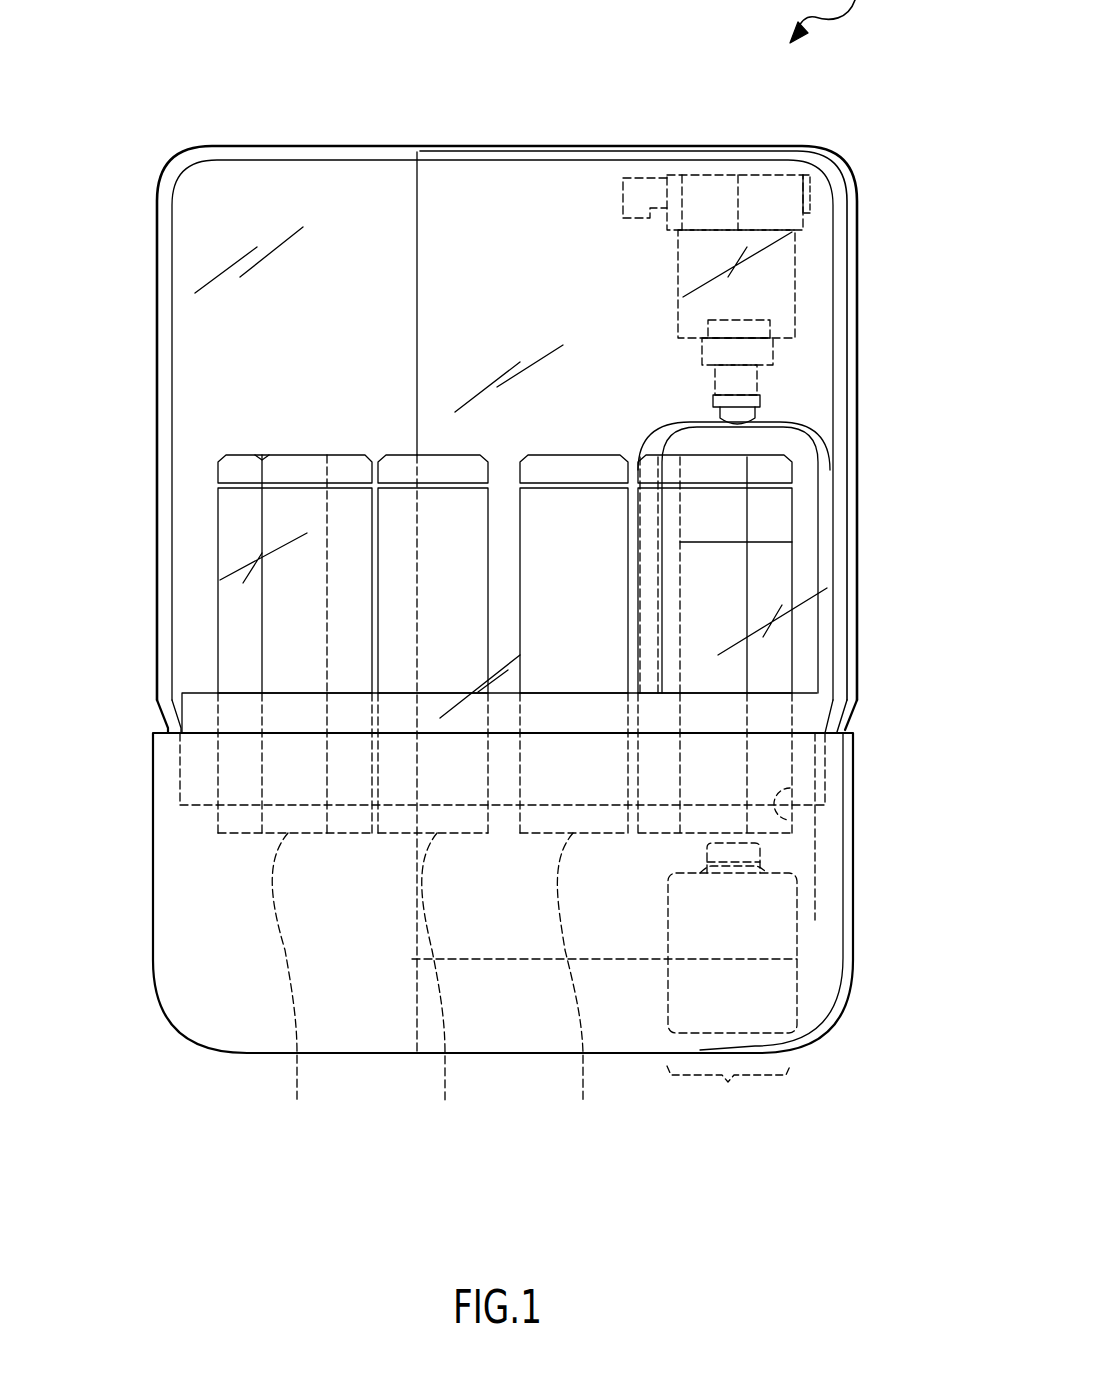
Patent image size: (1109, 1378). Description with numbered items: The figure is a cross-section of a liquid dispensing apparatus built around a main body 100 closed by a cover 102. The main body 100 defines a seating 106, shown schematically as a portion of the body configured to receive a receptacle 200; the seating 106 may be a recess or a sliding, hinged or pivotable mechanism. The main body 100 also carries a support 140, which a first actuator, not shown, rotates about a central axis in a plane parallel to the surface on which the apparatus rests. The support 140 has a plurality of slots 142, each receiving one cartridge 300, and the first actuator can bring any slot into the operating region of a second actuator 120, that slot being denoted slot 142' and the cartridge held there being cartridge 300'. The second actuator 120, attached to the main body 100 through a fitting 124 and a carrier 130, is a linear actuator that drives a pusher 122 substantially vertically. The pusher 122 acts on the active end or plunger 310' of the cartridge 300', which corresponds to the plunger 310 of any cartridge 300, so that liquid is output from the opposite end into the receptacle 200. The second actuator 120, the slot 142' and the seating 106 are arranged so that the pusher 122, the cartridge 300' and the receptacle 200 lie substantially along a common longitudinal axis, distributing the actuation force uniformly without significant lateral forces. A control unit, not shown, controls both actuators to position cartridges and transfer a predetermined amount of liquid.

The main body 100 is at (153, 925).
The cover 102 is at (157, 270).
The seating 106 is at (728, 1090).
The second actuator 120 is at (762, 283).
The pusher 122 is at (740, 387).
The fitting 124 is at (767, 200).
The carrier 130 is at (554, 284).
The support 140 is at (203, 777).
The slots 142 is at (437, 984).
The slot positioned in the operating region 142' is at (854, 787).
The receptacle 200 is at (760, 938).
The cartridge 300 is at (352, 754).
The cartridge positioned in the operating region 300' is at (794, 627).
The plunger 310 is at (356, 441).
The plunger of the positioned cartridge 310' is at (794, 488).